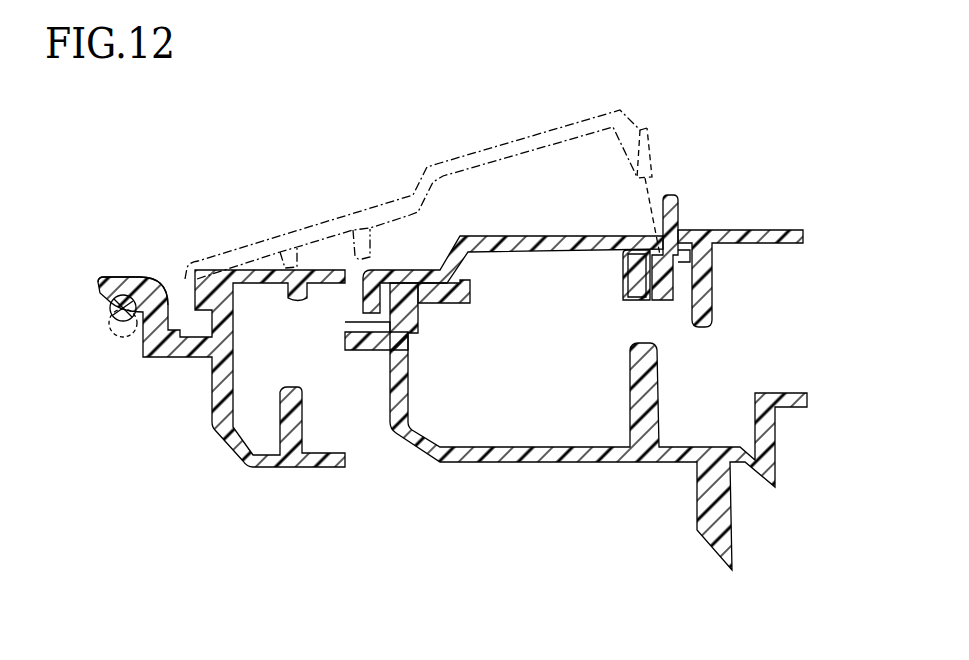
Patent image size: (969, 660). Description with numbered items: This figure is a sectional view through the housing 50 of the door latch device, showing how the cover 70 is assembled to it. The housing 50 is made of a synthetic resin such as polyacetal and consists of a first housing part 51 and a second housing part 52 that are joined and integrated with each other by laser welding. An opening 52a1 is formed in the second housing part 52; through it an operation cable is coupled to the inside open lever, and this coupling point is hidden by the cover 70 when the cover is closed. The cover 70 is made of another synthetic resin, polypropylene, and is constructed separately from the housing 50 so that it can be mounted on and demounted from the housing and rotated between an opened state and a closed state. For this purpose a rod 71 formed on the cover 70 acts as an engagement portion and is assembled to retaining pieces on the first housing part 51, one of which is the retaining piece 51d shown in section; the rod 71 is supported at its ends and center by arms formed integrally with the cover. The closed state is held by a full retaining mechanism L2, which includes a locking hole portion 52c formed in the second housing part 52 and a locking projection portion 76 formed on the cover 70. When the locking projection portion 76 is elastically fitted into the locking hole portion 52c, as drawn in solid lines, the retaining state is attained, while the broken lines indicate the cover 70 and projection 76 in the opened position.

The housing 50 is at (210, 385).
The first housing part 51 is at (510, 465).
The retaining piece 51d is at (122, 280).
The second housing part 52 is at (780, 228).
The opening 52a1 is at (472, 295).
The locking hole portion 52c is at (694, 262).
The cover 70 is at (525, 135).
The rod 71 is at (110, 310).
The locking projection portion 76 is at (652, 135).
The full retaining mechanism L2 is at (680, 246).